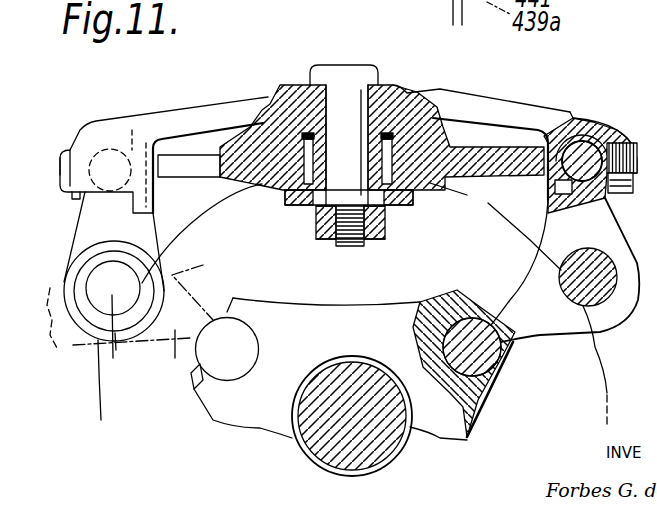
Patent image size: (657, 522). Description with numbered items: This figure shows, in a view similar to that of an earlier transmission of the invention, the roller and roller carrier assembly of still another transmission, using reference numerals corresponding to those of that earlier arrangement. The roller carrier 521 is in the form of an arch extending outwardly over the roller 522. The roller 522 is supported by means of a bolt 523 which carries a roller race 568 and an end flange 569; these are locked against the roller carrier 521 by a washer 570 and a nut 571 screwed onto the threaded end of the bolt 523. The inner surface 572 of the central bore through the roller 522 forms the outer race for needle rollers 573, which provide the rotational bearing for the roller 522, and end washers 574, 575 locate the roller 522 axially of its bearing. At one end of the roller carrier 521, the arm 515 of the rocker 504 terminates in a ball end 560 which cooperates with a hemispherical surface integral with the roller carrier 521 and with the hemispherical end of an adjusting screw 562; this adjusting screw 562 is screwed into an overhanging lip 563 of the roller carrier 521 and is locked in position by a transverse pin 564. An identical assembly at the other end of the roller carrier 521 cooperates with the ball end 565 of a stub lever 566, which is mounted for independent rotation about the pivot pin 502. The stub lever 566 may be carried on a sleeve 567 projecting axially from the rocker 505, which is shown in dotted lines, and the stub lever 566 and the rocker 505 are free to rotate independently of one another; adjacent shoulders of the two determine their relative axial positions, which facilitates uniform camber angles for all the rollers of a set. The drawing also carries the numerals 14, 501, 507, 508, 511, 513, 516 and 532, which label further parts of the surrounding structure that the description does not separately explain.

The shaft 14 is at (312, 440).
The knuckle body 501 is at (560, 286).
The pivot pin 502 is at (188, 354).
The rocker 504 is at (520, 237).
The rocker 505 is at (207, 283).
The pivot pin 507 is at (553, 320).
The lug 508 is at (168, 357).
The lower edge 511 is at (200, 360).
The section line 513 is at (462, 425).
The arm 515 is at (572, 243).
The break line 516 is at (58, 350).
The roller carrier 521 is at (523, 112).
The roller 522 is at (480, 108).
The bolt 523 is at (333, 68).
The lower body edge 532 is at (504, 380).
The ball end 560 is at (586, 150).
The adjusting screw 562 is at (553, 186).
The overhanging lip 563 is at (613, 140).
The transverse pin 564 is at (600, 172).
The ball end 565 is at (97, 150).
The stub lever 566 is at (128, 237).
The sleeve 567 is at (123, 249).
The roller race 568 is at (393, 84).
The end flange 569 is at (408, 204).
The washer 570 is at (316, 208).
The nut 571 is at (377, 225).
The inner surface 572 is at (290, 172).
The needle rollers 573 is at (415, 112).
The end washer 574 is at (280, 84).
The end washer 575 is at (303, 203).